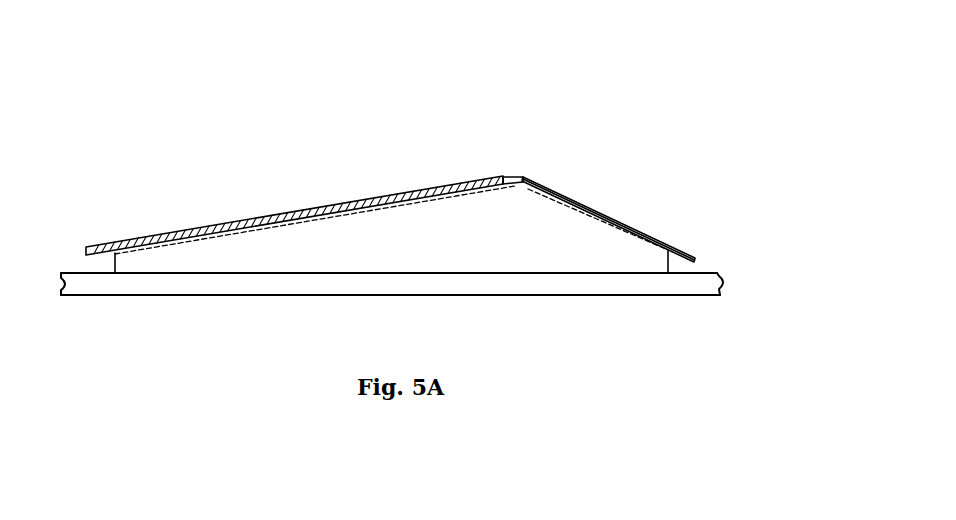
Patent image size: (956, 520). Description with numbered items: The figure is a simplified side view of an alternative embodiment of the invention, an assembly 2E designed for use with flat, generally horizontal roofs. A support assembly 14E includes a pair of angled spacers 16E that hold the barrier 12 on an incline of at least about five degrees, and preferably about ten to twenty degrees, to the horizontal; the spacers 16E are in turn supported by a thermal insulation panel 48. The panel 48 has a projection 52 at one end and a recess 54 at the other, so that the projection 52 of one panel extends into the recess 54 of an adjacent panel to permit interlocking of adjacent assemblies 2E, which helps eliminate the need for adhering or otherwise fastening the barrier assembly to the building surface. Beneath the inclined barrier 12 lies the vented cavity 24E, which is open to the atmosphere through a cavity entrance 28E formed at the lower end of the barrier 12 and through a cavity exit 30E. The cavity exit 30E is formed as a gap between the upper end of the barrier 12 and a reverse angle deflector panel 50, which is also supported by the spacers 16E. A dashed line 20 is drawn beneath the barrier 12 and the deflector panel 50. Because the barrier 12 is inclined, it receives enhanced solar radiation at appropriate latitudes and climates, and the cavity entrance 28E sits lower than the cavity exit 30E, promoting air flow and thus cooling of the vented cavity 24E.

The assembly 2E is at (576, 126).
The barrier 12 is at (250, 218).
The support assembly 14E is at (594, 188).
The angled spacers 16E is at (485, 243).
The membrane 20 is at (317, 222).
The vented cavity 24E is at (399, 236).
The cavity entrance 28E is at (95, 265).
The cavity exit 30E is at (512, 175).
The thermal insulation panel 48 is at (170, 285).
The reverse angle deflector panel 50 is at (627, 225).
The projection 52 is at (727, 285).
The recess 54 is at (62, 282).